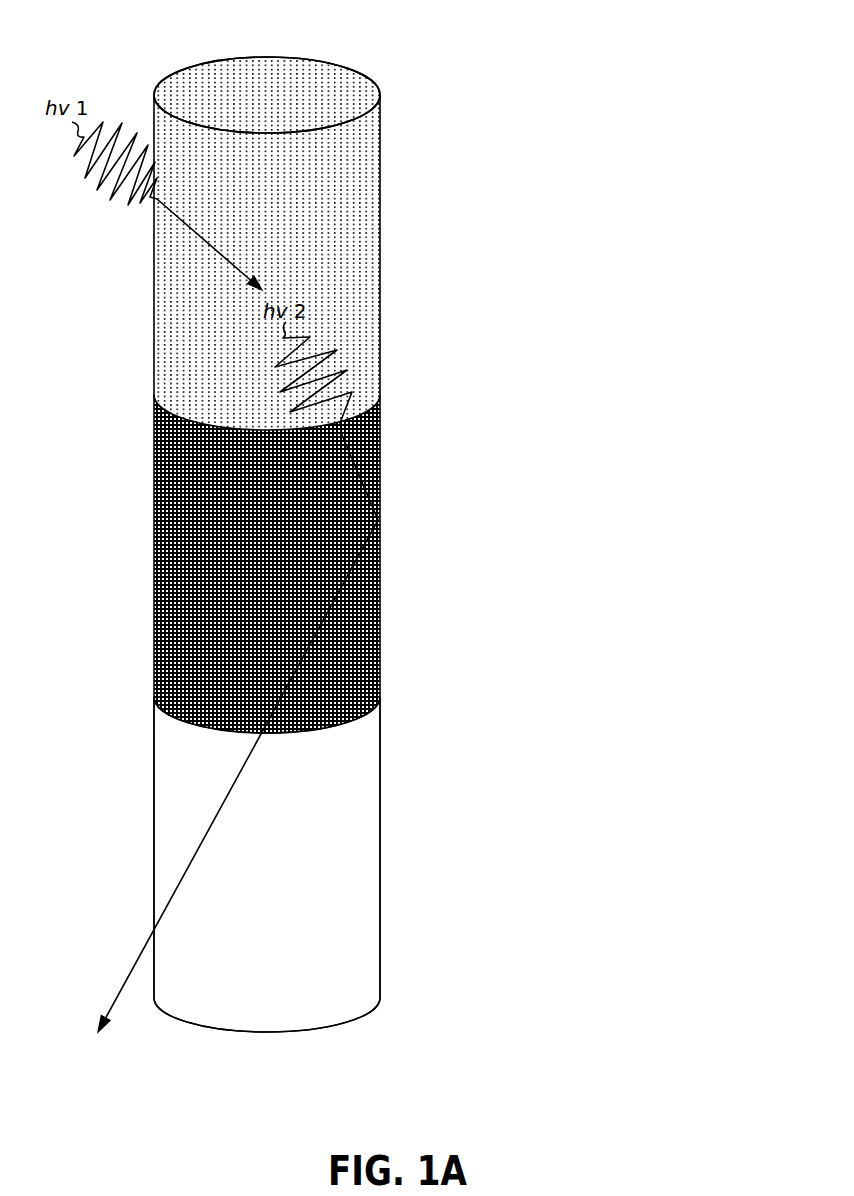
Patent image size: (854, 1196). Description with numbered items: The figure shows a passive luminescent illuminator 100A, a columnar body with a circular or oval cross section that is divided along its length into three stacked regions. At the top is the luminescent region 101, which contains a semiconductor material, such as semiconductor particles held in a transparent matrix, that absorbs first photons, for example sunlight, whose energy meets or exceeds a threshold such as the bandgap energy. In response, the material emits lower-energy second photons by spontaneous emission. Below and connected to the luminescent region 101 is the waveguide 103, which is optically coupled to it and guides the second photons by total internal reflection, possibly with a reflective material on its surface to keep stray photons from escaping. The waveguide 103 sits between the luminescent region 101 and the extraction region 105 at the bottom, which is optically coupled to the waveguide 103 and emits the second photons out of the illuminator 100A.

The passive luminescent illuminator 100A is at (295, 38).
The luminescent region 101 is at (398, 95).
The waveguide 103 is at (398, 395).
The extraction region 105 is at (398, 697).